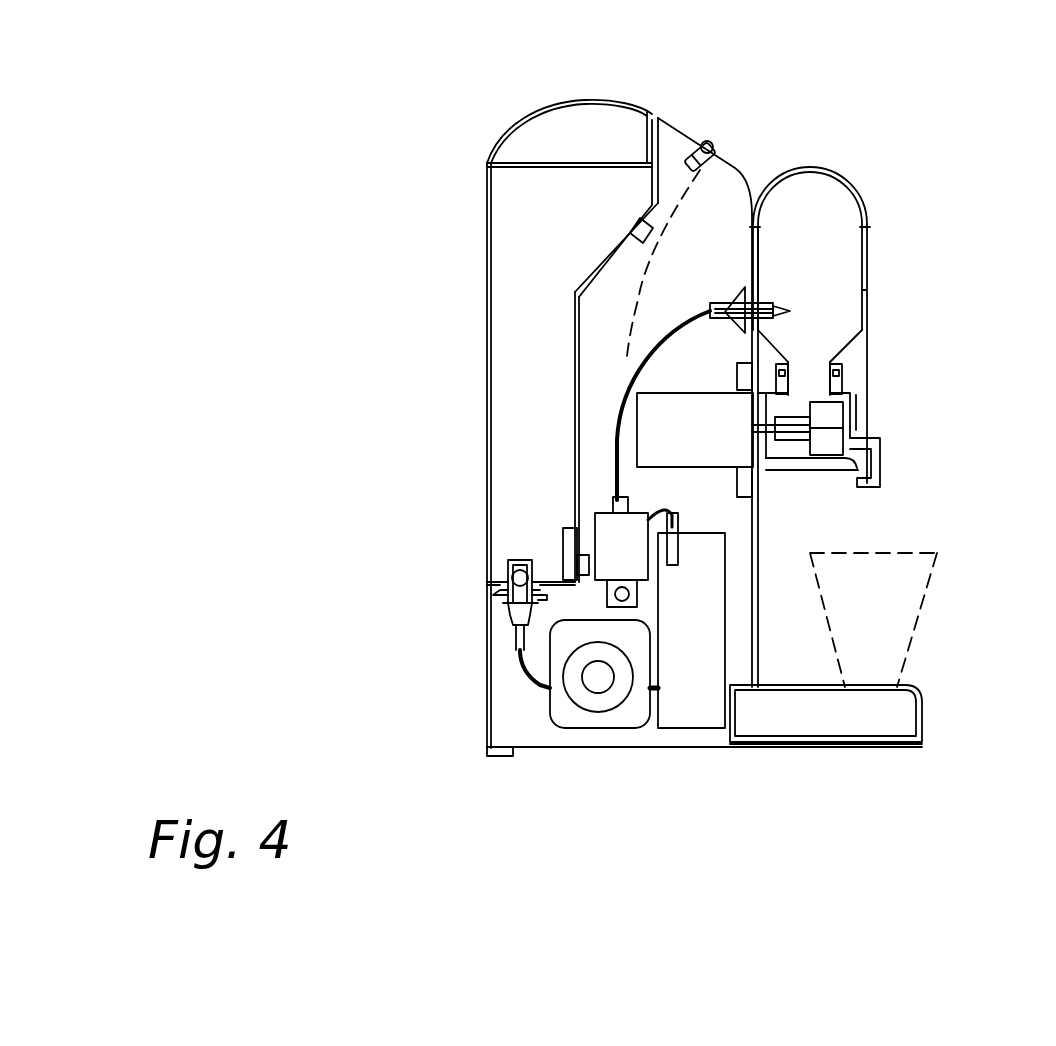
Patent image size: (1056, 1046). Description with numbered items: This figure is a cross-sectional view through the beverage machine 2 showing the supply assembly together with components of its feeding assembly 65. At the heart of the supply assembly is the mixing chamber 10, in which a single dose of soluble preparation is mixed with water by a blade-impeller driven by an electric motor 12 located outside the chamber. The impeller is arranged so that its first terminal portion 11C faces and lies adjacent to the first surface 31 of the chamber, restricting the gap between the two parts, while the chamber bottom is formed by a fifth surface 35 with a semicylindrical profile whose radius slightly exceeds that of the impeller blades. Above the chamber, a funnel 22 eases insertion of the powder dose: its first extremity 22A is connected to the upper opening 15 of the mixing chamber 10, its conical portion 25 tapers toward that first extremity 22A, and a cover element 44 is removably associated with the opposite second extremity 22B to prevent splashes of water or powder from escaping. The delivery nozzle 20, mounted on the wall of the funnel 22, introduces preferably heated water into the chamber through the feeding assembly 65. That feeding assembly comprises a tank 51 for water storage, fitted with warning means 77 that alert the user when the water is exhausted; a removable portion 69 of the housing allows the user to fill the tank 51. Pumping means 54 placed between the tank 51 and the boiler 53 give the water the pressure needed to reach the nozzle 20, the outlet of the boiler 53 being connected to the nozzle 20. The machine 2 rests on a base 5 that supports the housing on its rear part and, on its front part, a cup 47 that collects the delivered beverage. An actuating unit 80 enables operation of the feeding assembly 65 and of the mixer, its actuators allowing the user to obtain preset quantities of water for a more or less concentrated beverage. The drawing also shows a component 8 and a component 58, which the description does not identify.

The beverage machine 2 is at (967, 140).
The base 5 is at (922, 705).
The support bracket 8 is at (888, 473).
The mixing chamber 10 is at (802, 448).
The first terminal portion 11C is at (867, 412).
The electric motor 12 is at (676, 449).
The upper opening 15 is at (796, 391).
The nozzle 20 is at (783, 305).
The funnel 22 is at (867, 275).
The first extremity 22A is at (850, 382).
The second extremity 22B is at (867, 233).
The conical portion 25 is at (848, 345).
The first surface 31 is at (847, 417).
The fifth surface 35 is at (798, 465).
The cover element 44 is at (797, 167).
The cup 47 is at (920, 583).
The tank 51 is at (507, 272).
The boiler 53 is at (686, 713).
The pumping means 54 is at (595, 720).
The base 58 is at (822, 722).
The feeding assembly 65 is at (598, 375).
The removable portion 69 is at (540, 113).
The warning means 77 is at (563, 540).
The actuating unit 80 is at (711, 140).